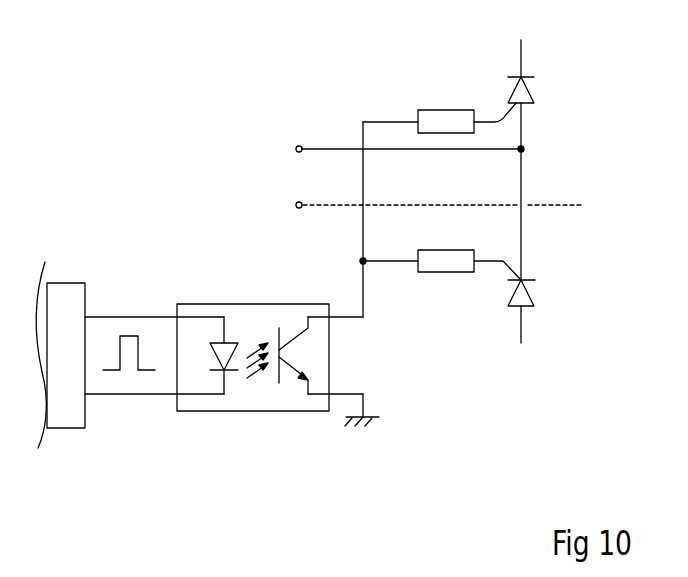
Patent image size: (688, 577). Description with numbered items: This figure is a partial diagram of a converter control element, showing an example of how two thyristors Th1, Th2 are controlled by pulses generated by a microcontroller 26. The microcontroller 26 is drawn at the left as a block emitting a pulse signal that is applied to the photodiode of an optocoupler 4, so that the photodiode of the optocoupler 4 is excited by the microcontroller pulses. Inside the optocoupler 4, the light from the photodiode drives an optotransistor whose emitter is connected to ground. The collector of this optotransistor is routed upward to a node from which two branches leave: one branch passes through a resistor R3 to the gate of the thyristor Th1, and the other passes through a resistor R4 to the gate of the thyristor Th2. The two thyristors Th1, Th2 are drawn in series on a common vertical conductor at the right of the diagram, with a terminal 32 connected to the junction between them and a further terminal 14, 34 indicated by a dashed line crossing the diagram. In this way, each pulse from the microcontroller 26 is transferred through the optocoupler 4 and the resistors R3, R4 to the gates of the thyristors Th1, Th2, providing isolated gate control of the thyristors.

The microcontroller 26 is at (63, 283).
The optocoupler 4 is at (250, 411).
The control terminal 32 is at (296, 147).
The switching circuit 14 is at (410, 204).
The supply line terminal 34 is at (410, 204).
The resistor R3 is at (439, 108).
The resistor R4 is at (442, 273).
The thyristor Th1 is at (544, 94).
The thyristor Th2 is at (544, 311).